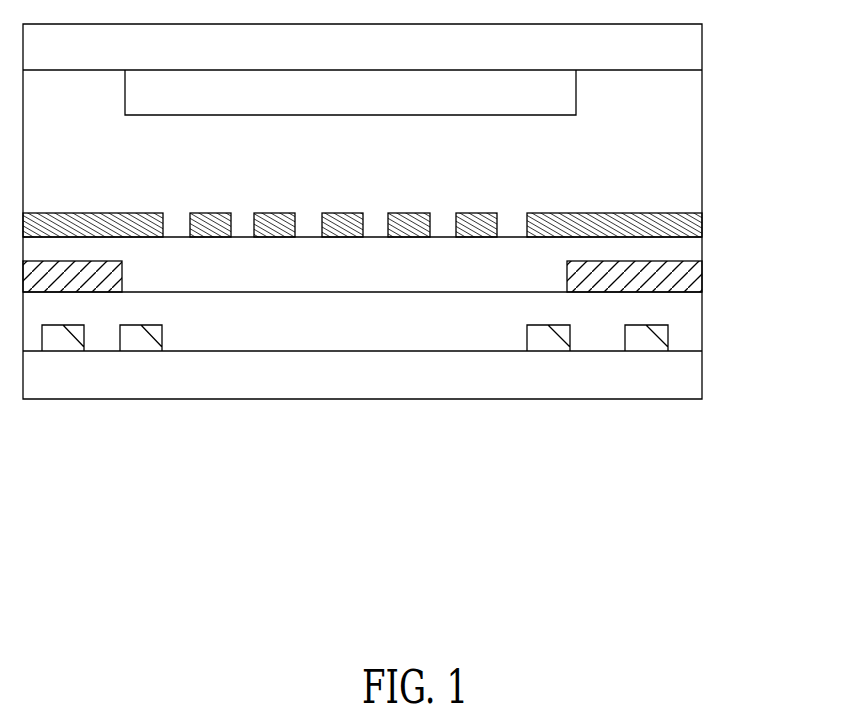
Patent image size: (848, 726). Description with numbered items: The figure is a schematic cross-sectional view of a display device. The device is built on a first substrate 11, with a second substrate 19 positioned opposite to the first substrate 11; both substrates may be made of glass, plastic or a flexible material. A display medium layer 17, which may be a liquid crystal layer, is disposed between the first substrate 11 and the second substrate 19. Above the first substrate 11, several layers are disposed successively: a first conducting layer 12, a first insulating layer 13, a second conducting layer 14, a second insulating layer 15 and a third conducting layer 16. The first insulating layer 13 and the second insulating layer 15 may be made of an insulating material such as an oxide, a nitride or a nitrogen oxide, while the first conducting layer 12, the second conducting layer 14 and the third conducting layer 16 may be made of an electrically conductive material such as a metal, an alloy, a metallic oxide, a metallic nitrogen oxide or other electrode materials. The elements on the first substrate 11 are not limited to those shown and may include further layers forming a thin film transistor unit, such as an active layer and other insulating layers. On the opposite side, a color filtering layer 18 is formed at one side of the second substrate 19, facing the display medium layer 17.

The first substrate 11 is at (695, 380).
The first conducting layer 12 is at (655, 337).
The first insulating layer 13 is at (695, 308).
The second conducting layer 14 is at (695, 277).
The second insulating layer 15 is at (695, 244).
The third conducting layer 16 is at (497, 222).
The display medium layer 17 is at (695, 158).
The color filtering layer 18 is at (576, 90).
The second substrate 19 is at (695, 44).